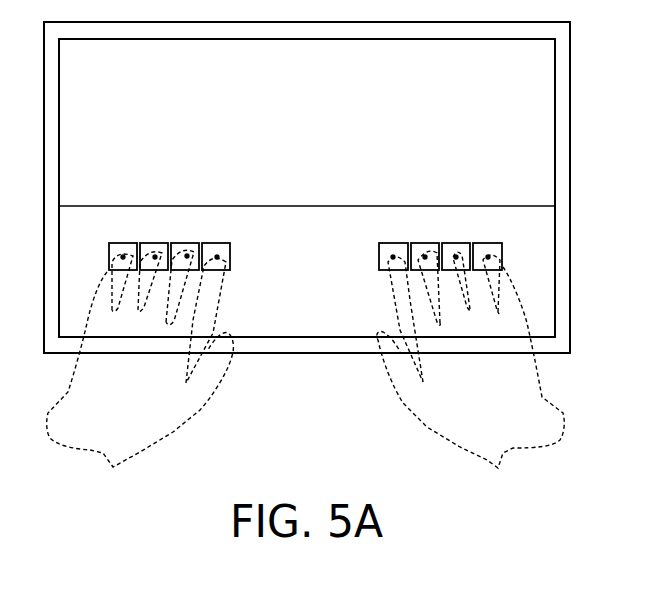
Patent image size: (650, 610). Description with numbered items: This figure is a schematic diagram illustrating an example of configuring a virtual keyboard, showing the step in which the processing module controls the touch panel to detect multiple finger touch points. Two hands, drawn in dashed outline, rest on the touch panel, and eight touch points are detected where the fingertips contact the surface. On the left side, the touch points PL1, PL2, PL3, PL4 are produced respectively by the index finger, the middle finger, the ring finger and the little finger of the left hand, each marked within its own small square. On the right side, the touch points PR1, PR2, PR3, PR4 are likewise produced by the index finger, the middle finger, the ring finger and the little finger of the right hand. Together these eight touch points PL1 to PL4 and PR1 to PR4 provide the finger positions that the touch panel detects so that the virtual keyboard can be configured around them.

The touch point PL1 is at (217, 257).
The touch point PL2 is at (187, 256).
The touch point PL3 is at (155, 257).
The touch point PL4 is at (123, 257).
The touch point PR1 is at (393, 257).
The touch point PR2 is at (425, 257).
The touch point PR3 is at (456, 257).
The touch point PR4 is at (488, 257).